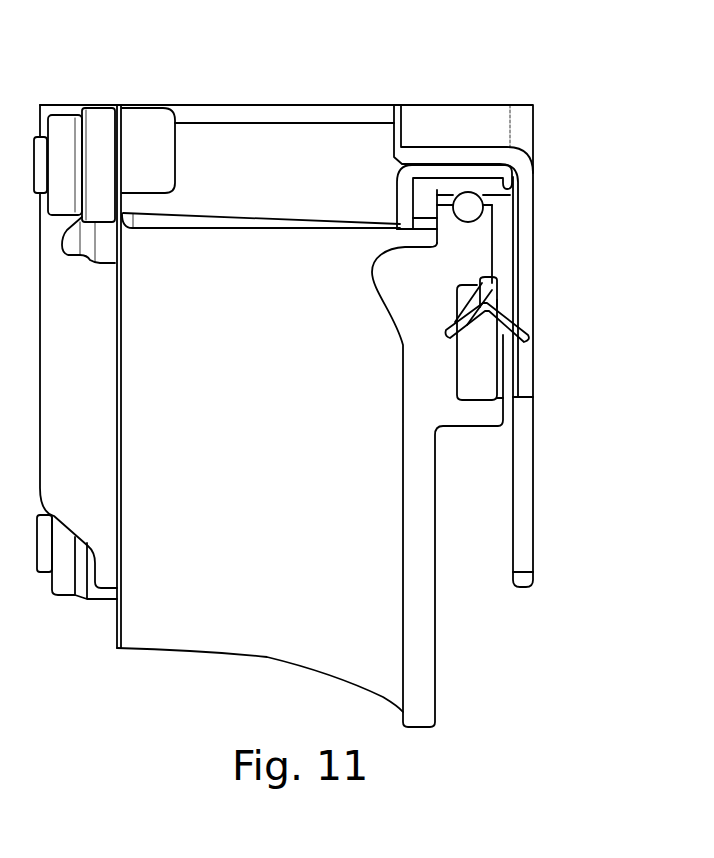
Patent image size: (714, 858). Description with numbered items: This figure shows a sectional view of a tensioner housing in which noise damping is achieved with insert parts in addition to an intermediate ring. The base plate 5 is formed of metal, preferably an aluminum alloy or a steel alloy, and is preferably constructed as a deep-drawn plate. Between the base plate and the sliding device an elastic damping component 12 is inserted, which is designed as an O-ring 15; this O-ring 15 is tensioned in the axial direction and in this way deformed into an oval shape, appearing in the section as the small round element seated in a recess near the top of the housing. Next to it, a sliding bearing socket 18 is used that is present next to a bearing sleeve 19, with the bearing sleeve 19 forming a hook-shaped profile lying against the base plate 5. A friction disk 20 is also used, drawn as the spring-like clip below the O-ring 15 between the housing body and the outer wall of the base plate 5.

The base plate 5 is at (533, 228).
The elastic damping component 12 is at (470, 212).
The O-ring 15 is at (560, 200).
The sliding bearing socket 18 is at (418, 252).
The bearing sleeve 19 is at (453, 170).
The friction disk 20 is at (515, 303).